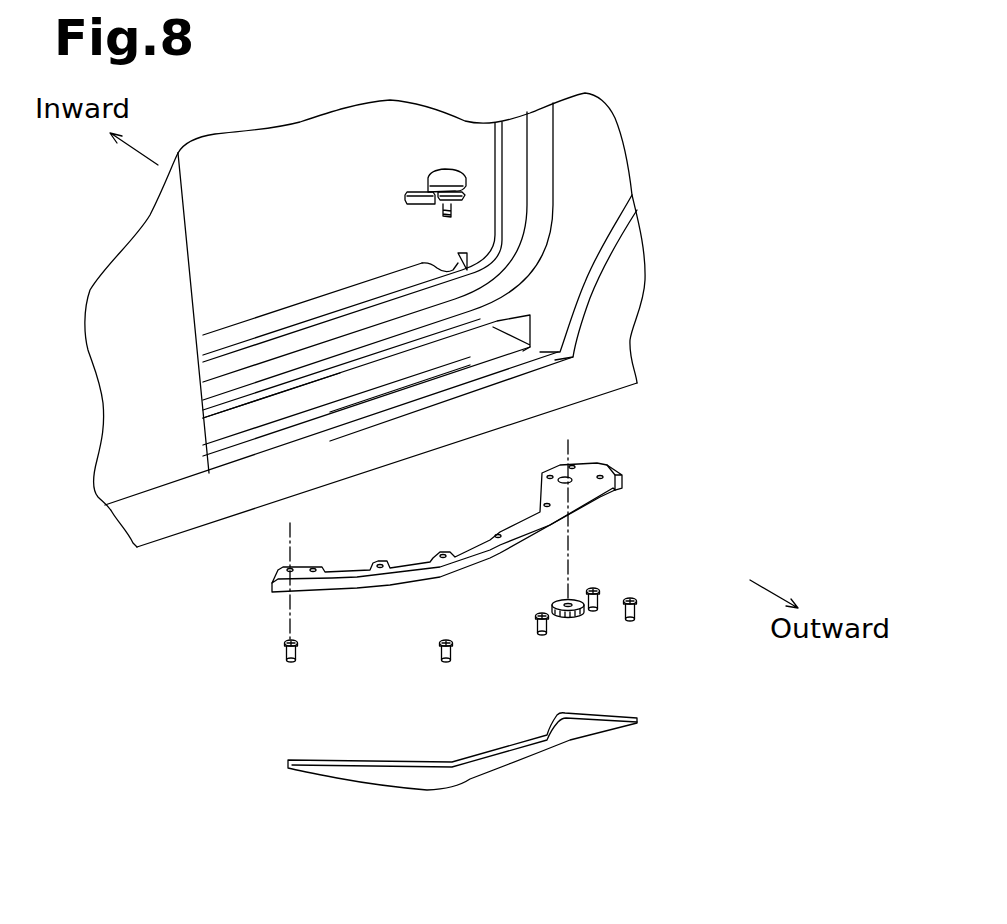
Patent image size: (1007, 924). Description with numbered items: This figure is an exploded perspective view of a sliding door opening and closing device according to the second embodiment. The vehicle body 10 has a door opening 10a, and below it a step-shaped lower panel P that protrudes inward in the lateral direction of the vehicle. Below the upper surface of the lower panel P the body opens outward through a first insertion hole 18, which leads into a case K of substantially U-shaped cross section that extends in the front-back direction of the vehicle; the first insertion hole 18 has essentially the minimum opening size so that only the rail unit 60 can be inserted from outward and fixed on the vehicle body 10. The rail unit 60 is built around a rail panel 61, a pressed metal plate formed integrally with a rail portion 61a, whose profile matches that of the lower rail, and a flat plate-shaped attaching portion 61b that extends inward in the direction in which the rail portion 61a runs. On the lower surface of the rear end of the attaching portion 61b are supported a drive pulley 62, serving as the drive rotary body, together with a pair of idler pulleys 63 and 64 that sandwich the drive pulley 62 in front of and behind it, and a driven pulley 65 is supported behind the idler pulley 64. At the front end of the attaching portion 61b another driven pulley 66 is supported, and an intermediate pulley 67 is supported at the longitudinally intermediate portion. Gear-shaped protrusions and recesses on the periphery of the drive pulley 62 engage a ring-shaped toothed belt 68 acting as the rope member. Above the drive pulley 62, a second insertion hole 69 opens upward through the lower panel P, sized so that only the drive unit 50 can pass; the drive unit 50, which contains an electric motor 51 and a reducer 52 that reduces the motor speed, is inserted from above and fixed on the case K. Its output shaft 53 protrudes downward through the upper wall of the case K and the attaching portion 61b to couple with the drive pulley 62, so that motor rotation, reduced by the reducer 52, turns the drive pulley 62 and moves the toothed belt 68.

The vehicle body 10 is at (185, 515).
The door opening 10a is at (496, 148).
The first insertion hole 18 is at (206, 430).
The drive unit 50 is at (396, 156).
The electric motor 51 is at (414, 204).
The reducer 52 is at (446, 177).
The output shaft 53 is at (455, 210).
The rail unit 60 is at (668, 455).
The rail panel 61 is at (590, 464).
The rail portion 61a is at (590, 506).
The attaching portion 61b is at (550, 470).
The drive pulley 62 is at (560, 598).
The idler pulley 63 is at (535, 618).
The idler pulley 64 is at (597, 606).
The driven pulley 65 is at (640, 608).
The driven pulley 66 is at (283, 650).
The intermediate pulley 67 is at (438, 647).
The toothed belt 68 is at (500, 752).
The second insertion hole 69 is at (420, 257).
The lower panel P is at (253, 328).
The case K is at (365, 385).